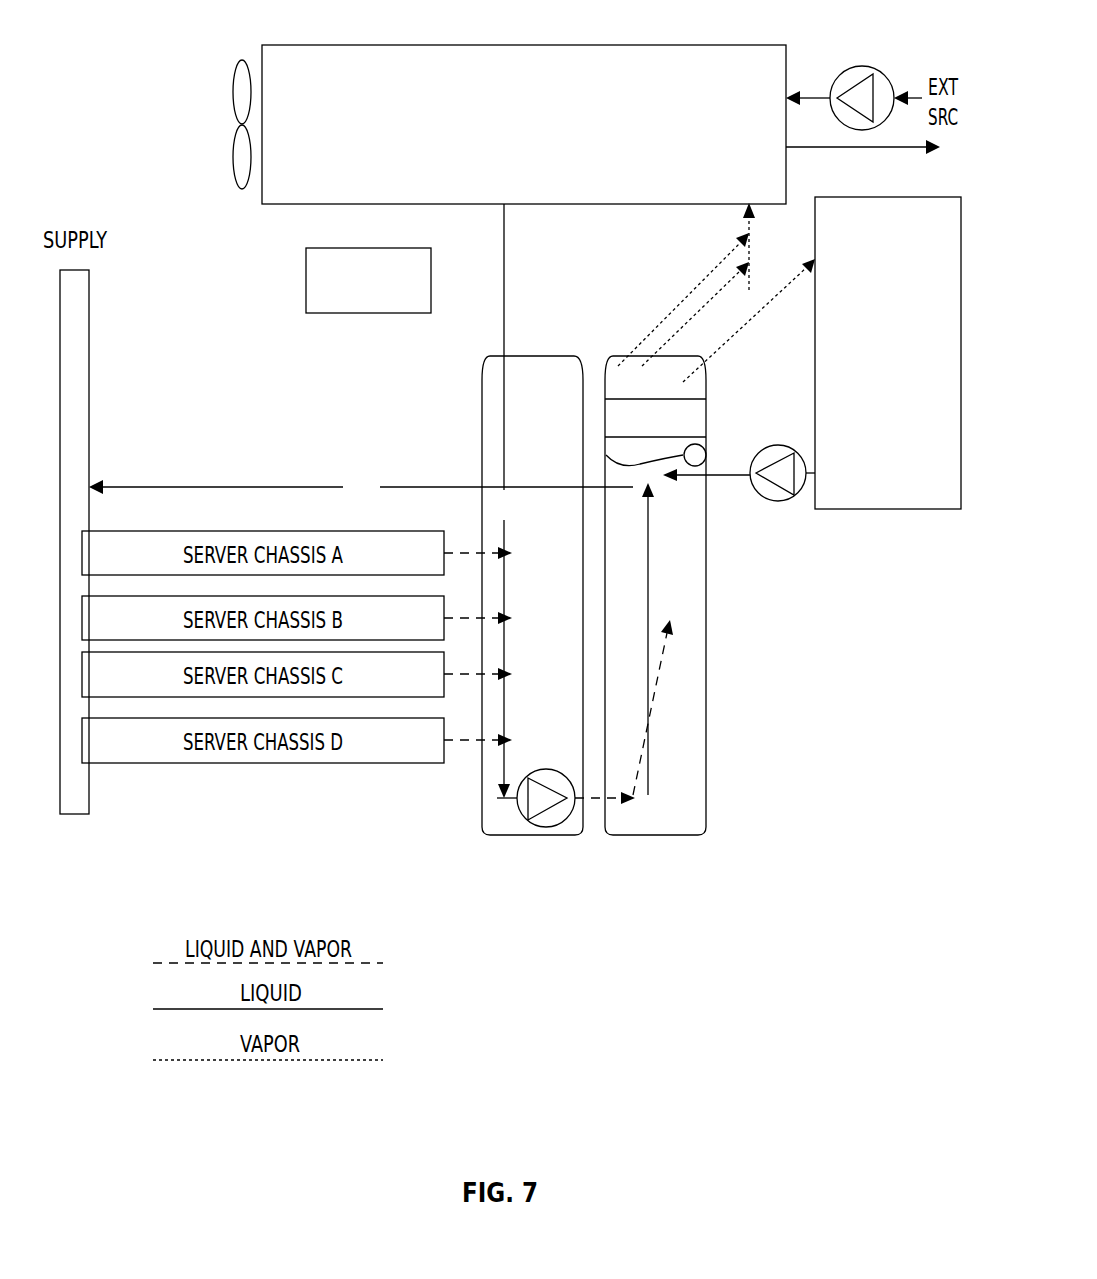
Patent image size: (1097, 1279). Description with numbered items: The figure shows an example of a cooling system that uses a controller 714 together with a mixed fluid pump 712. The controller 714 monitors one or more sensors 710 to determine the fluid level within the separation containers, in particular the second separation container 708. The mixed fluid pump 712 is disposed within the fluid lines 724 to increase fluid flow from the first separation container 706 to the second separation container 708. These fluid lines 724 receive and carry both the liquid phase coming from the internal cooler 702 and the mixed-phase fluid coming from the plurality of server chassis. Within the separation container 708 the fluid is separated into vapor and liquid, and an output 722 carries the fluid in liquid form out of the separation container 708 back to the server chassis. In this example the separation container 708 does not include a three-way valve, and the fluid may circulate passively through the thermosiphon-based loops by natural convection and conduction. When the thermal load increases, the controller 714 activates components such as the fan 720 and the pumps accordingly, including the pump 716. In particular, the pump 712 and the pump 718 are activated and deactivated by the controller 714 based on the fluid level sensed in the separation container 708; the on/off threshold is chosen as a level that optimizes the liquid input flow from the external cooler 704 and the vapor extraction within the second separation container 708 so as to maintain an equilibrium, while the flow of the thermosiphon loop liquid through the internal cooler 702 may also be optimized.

The internal cooler 702 is at (623, 140).
The external cooler 704 is at (942, 382).
The first separation container 706 is at (549, 877).
The second separation container 708 is at (674, 877).
The sensor 710 is at (706, 452).
The mixed fluid pump 712 is at (547, 769).
The controller 714 is at (385, 311).
The pump 716 is at (862, 66).
The pump 718 is at (773, 501).
The fan 720 is at (259, 44).
The output 722 is at (378, 501).
The fluid lines 724 is at (520, 516).